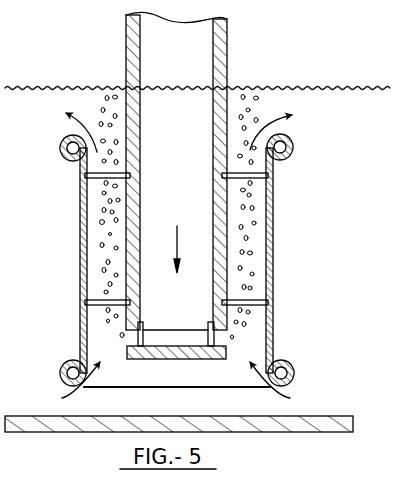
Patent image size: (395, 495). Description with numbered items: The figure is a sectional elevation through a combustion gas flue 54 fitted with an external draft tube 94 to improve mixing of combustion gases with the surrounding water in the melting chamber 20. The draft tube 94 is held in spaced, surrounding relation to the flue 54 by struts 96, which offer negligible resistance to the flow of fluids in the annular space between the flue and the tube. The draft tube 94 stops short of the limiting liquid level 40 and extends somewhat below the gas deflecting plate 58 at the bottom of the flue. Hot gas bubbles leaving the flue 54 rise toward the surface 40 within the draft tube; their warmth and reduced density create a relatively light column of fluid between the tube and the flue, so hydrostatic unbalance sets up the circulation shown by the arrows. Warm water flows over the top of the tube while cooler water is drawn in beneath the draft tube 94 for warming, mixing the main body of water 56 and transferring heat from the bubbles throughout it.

The melting chamber 20 is at (322, 418).
The limiting liquid level 40 is at (295, 90).
The flue 54 is at (226, 62).
The main body of water 56 is at (45, 284).
The gas deflecting plate 58 is at (193, 357).
The draft tube 94 is at (273, 247).
The struts 96 is at (249, 300).